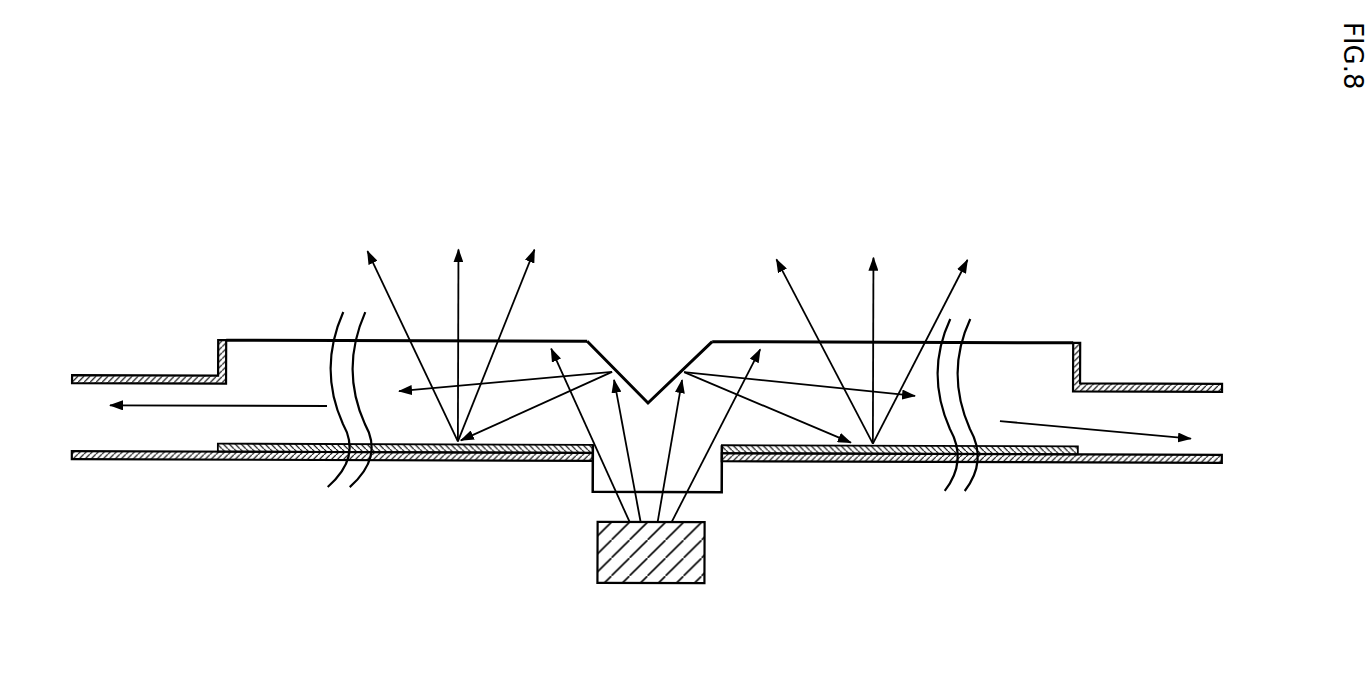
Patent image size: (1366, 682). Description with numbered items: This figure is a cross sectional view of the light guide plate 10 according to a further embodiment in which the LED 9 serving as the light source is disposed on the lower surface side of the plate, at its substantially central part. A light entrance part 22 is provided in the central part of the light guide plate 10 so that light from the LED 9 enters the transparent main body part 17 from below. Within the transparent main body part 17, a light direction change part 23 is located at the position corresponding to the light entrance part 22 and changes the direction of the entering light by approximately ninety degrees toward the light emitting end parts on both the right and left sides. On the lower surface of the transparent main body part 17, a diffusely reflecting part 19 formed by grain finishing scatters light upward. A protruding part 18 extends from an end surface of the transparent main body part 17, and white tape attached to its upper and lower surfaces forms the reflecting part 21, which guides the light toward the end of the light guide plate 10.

The LED 9 is at (707, 547).
The light guide plate 10 is at (1048, 340).
The transparent main body part 17 is at (563, 341).
The protruding part 18 is at (72, 418).
The diffusely reflecting part 19 is at (273, 444).
The reflecting part 21 is at (143, 373).
The light entrance part 22 is at (722, 473).
The light direction change part 23 is at (628, 378).